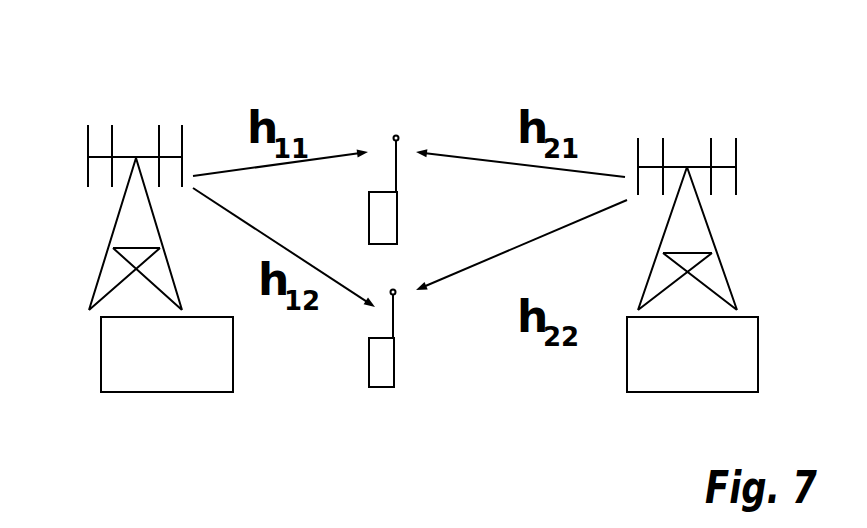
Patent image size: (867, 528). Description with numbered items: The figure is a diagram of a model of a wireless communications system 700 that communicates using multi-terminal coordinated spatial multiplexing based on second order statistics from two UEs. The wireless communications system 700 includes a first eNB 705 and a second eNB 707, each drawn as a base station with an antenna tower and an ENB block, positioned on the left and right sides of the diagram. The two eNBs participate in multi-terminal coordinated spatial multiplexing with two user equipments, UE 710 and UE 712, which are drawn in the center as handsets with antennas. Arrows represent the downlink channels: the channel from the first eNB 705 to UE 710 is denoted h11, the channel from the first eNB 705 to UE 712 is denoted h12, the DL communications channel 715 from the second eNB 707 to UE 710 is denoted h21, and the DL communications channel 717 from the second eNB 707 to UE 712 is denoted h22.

The wireless communications system 700 is at (95, 47).
The first eNB 705 is at (101, 340).
The second eNB 707 is at (758, 340).
The UE 710 is at (397, 213).
The UE 712 is at (394, 355).
The DL communications channel 715 is at (538, 166).
The DL communications channel 717 is at (497, 256).